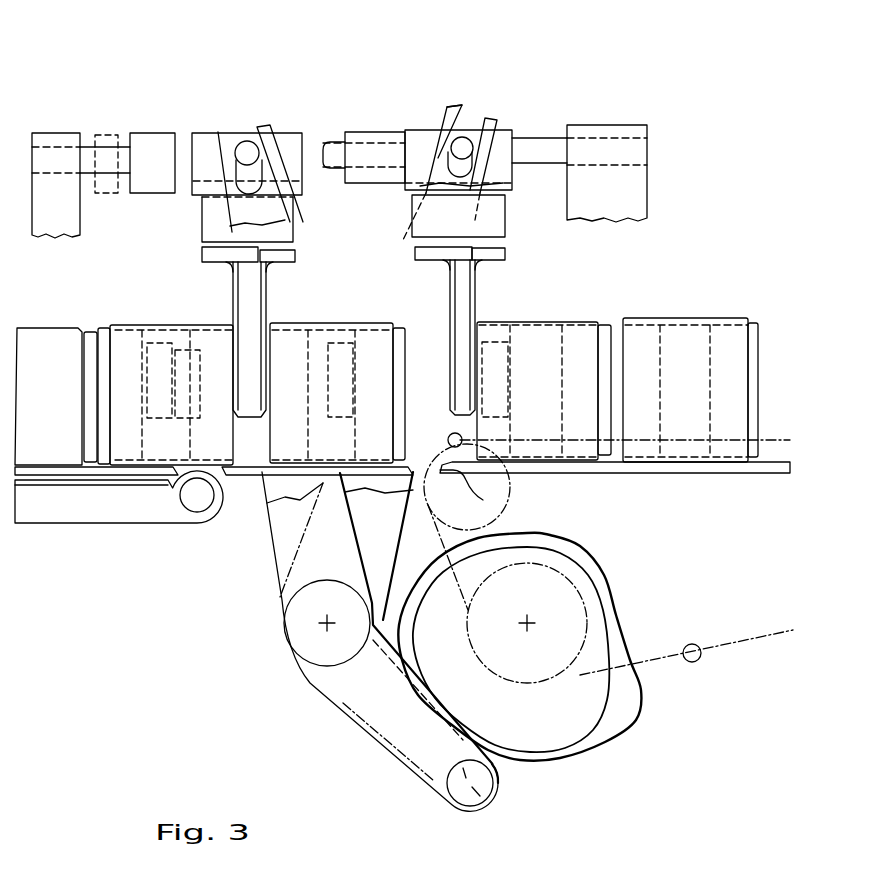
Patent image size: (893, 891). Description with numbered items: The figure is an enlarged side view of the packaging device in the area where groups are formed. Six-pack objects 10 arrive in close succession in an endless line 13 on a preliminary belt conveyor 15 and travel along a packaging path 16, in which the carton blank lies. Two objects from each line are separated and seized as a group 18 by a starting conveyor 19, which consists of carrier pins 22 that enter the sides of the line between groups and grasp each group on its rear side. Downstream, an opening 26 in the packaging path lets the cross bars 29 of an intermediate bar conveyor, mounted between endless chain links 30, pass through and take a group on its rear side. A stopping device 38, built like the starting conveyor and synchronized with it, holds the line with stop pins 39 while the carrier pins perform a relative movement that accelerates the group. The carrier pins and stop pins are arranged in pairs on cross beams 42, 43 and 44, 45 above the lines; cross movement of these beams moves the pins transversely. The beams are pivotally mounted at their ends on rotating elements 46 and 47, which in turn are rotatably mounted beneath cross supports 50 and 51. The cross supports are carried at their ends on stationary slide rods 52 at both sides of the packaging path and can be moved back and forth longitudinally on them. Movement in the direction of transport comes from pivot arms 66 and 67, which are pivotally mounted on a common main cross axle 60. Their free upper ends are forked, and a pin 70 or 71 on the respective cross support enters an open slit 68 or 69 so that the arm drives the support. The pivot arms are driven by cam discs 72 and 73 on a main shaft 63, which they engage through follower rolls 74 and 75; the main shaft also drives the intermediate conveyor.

The objects 10 is at (573, 335).
The endless line 13 is at (61, 313).
The preliminary belt conveyor 15 is at (79, 530).
The packaging path 16 is at (735, 480).
The group 18 is at (629, 303).
The starting conveyor 19 is at (455, 103).
The carrier pin 22 is at (462, 307).
The opening 26 is at (483, 500).
The cross bar 29 is at (450, 435).
The endless chain link 30 is at (760, 637).
The stopping device 38 is at (147, 118).
The stop pin 39 is at (242, 300).
The cross beam 42 is at (415, 253).
The cross beam 43 is at (500, 257).
The cross beam 44 is at (200, 252).
The cross beam 45 is at (287, 260).
The rotating element 46 is at (210, 212).
The rotating element 47 is at (430, 208).
The cross support 50 is at (205, 140).
The cross support 51 is at (413, 140).
The stationary slide rod 52 is at (85, 152).
The main cross axle 60 is at (327, 625).
The main shaft 63 is at (533, 620).
The pivot arm 66 is at (378, 570).
The pivot arm 67 is at (282, 522).
The open slit 68 is at (243, 137).
The open slit 69 is at (462, 115).
The pin 70 is at (246, 150).
The pin 71 is at (462, 150).
The cam disc 72 is at (632, 695).
The cam disc 73 is at (573, 705).
The follower roll 74 is at (515, 782).
The follower roll 75 is at (460, 798).